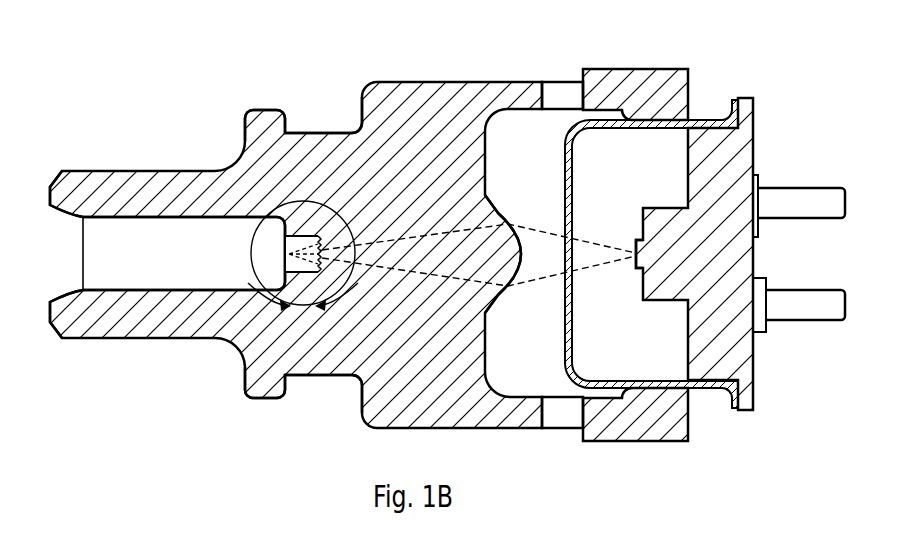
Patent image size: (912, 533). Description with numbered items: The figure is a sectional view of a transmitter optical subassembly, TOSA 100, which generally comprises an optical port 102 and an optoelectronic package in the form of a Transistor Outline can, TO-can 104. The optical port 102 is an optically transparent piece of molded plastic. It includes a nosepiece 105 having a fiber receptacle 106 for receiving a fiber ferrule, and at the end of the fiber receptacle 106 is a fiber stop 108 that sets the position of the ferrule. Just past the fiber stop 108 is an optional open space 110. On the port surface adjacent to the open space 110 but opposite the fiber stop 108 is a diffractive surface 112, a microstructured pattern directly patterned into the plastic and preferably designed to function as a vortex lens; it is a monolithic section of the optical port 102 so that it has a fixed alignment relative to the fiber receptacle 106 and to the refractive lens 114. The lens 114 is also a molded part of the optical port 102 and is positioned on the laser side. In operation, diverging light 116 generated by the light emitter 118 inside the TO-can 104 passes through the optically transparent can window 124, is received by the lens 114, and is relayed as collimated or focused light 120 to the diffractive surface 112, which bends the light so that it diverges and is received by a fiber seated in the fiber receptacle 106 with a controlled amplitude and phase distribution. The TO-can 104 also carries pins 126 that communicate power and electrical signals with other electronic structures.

The TOSA 100 is at (446, 246).
The optical port 102 is at (333, 132).
The TO-can 104 is at (622, 120).
The nosepiece 105 is at (90, 322).
The fiber receptacle 106 is at (187, 253).
The fiber stop 108 is at (282, 258).
The open space 110 is at (302, 245).
The diffractive surface 112 is at (313, 274).
The lens 114 is at (497, 242).
The diverging light 116 is at (598, 247).
The light emitter 118 is at (565, 345).
The collimated or focused light 120 is at (427, 272).
The can window 124 is at (557, 220).
The pins 126 is at (800, 188).